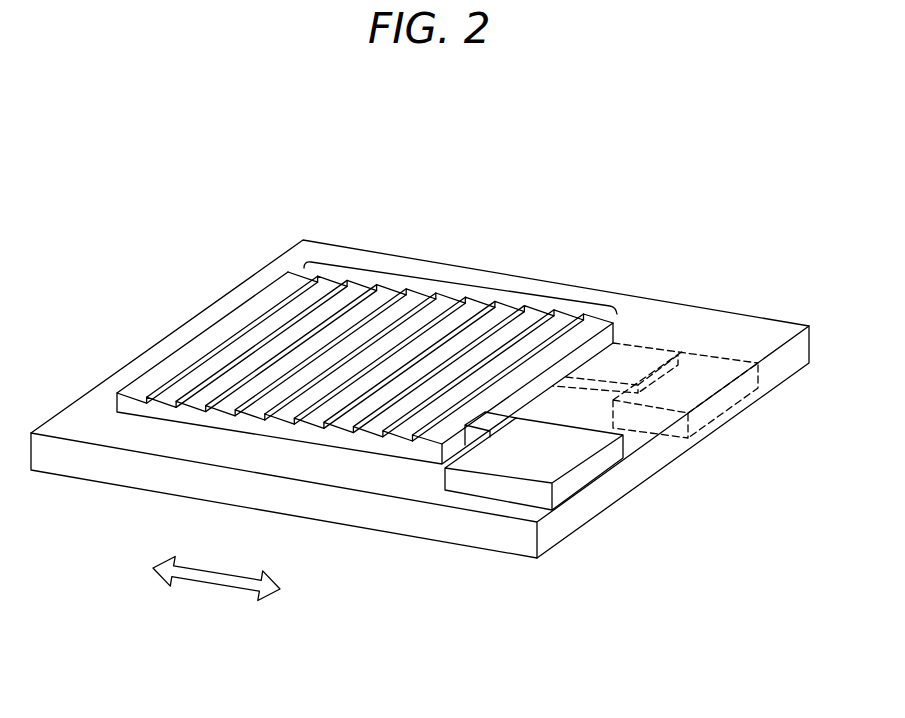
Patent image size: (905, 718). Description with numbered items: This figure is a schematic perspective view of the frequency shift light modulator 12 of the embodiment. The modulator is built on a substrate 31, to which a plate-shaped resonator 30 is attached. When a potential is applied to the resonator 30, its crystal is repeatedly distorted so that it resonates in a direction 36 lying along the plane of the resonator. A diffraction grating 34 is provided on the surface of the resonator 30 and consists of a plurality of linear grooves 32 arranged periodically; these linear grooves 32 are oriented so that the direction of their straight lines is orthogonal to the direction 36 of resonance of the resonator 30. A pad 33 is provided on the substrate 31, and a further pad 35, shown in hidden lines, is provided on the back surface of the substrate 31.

The frequency shift light modulator 12 is at (557, 207).
The resonator 30 is at (382, 390).
The substrate 31 is at (388, 514).
The linear grooves 32 is at (353, 433).
The pad 33 is at (561, 462).
The diffraction grating 34 is at (448, 276).
The pad 35 is at (715, 402).
The direction of resonance 36 is at (208, 580).